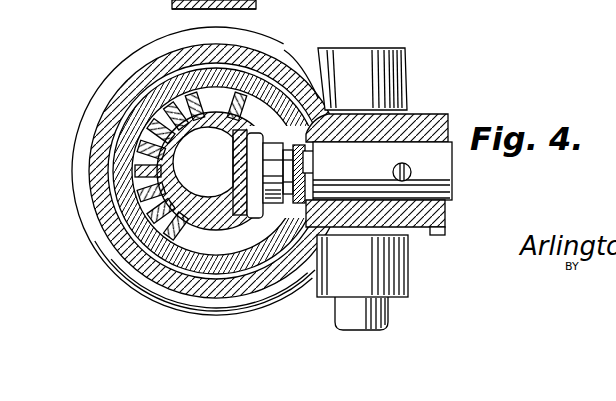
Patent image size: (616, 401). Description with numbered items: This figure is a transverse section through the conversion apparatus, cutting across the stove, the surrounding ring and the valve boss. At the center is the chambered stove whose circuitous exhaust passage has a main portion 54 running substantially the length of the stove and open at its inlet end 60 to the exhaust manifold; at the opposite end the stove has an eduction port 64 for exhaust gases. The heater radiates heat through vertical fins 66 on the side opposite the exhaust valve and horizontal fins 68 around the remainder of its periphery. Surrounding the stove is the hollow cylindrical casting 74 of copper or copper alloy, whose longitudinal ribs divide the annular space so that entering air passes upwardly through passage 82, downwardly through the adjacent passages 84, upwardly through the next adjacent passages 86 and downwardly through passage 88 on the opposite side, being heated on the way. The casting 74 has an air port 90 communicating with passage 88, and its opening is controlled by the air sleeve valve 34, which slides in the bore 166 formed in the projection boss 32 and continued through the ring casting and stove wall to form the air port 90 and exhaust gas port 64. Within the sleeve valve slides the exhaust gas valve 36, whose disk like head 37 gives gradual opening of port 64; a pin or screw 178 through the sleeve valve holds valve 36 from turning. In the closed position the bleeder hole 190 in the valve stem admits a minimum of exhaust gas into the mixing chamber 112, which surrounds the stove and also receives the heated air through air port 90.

The projection boss 32 is at (402, 137).
The air sleeve valve 34 is at (375, 146).
The exhaust gas valve 36 is at (266, 157).
The disk like head 37 is at (262, 182).
The main portion 54 is at (157, 200).
The inlet end 60 is at (250, 0).
The eduction port 64 is at (262, 107).
The vertical fins 66 is at (110, 200).
The horizontal fins 68 is at (205, 312).
The hollow cylindrical casting 74 is at (128, 123).
The passage 82 is at (110, 158).
The passages 84 is at (168, 58).
The passages 86 is at (284, 67).
The passage 88 is at (322, 113).
The air port 90 is at (307, 190).
The mixing chamber 112 is at (326, 98).
The bore 166 is at (430, 232).
The pin or screw 178 is at (412, 172).
The bleeder hole 190 is at (272, 170).